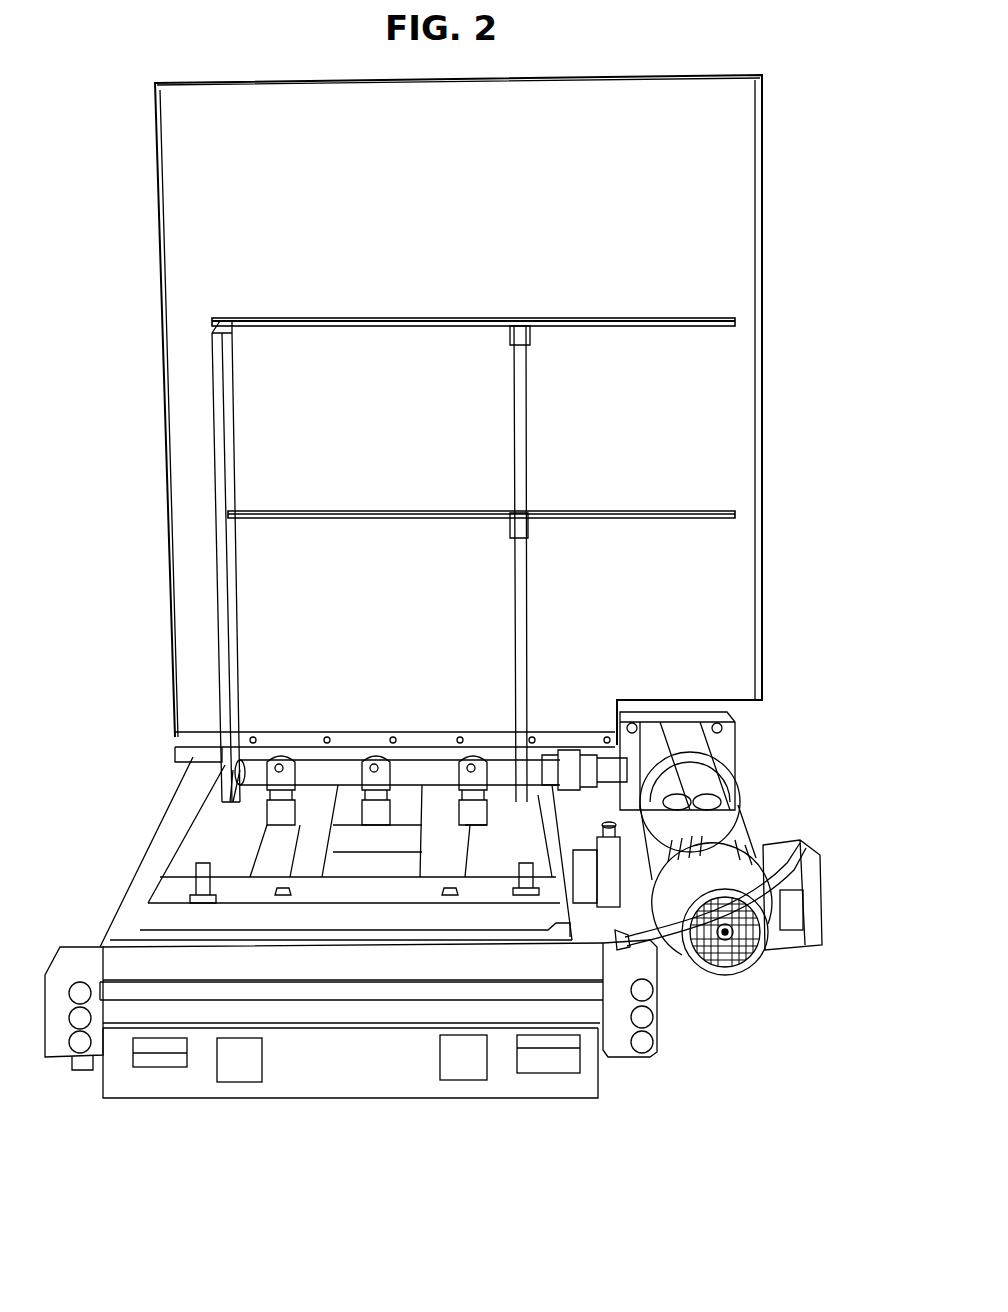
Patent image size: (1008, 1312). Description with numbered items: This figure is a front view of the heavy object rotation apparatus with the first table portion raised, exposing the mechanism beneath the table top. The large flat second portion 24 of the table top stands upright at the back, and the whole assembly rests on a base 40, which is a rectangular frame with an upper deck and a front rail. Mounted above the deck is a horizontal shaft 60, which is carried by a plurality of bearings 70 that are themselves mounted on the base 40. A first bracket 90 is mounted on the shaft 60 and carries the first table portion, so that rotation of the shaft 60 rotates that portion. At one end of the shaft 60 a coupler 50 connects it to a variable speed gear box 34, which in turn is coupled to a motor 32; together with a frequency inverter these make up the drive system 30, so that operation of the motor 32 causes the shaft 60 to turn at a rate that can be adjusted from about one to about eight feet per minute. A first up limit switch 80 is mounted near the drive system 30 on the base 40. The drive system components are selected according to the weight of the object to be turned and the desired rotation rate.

The second portion 24 is at (680, 235).
The first bracket 90 is at (702, 505).
The base 40 is at (207, 1010).
The shaft 60 is at (420, 745).
The bearings 70 is at (355, 745).
The coupler 50 is at (590, 745).
The variable speed gear box 34 is at (705, 755).
The drive system 30 is at (740, 803).
The motor 32 is at (733, 963).
The first up limit switch 80 is at (613, 888).